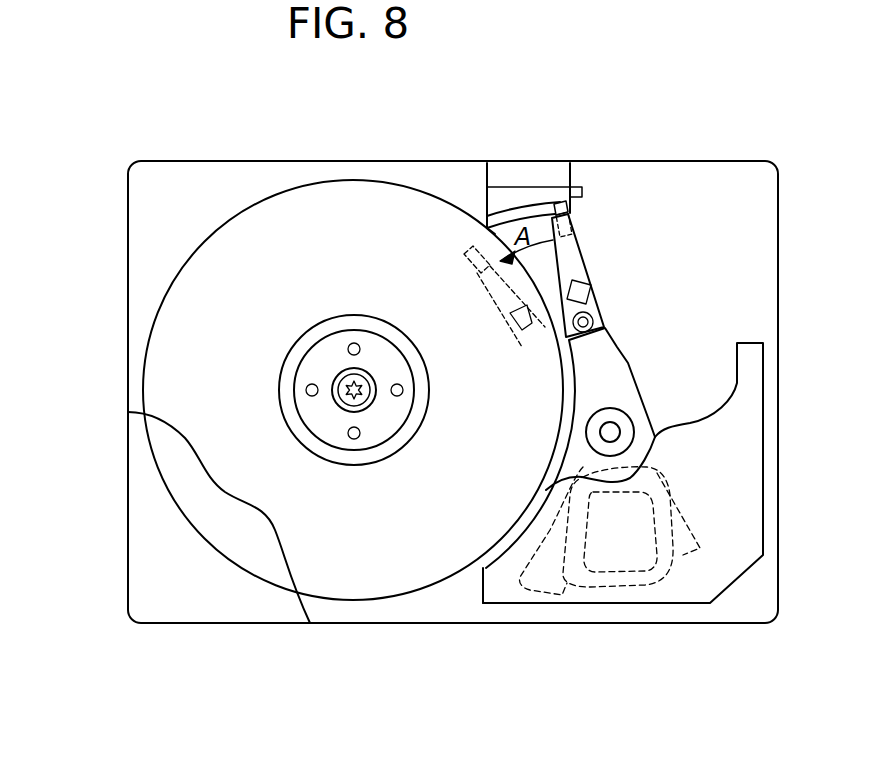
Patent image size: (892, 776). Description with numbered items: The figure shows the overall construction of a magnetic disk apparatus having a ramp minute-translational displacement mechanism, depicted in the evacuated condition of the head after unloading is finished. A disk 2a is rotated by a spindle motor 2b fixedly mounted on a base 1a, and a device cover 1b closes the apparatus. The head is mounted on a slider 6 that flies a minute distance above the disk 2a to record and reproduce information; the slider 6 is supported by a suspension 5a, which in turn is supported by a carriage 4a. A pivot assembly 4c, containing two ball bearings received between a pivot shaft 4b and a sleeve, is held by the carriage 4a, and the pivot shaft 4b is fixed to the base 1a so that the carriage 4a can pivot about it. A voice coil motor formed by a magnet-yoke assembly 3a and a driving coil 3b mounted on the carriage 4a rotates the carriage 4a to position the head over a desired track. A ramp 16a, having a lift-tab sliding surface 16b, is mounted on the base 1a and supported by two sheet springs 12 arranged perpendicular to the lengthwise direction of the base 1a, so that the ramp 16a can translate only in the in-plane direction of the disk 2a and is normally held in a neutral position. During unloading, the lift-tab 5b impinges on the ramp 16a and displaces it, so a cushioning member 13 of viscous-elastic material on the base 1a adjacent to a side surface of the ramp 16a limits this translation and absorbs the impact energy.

The base 1a is at (333, 613).
The device cover 1b is at (242, 603).
The disk 2a is at (337, 226).
The spindle motor 2b is at (337, 405).
The magnet-yoke assembly 3a is at (747, 343).
The driving coil 3b is at (618, 583).
The carriage 4a is at (618, 372).
The pivot shaft 4b is at (610, 432).
The pivot assembly 4c is at (613, 414).
The suspension 5a is at (590, 270).
The lift-tab 5b is at (568, 207).
The slider 6 is at (572, 224).
The sheet springs 12 is at (485, 168).
The cushioning member 13 is at (583, 192).
The ramp 16a is at (512, 196).
The lift-tab sliding surface 16b is at (543, 200).